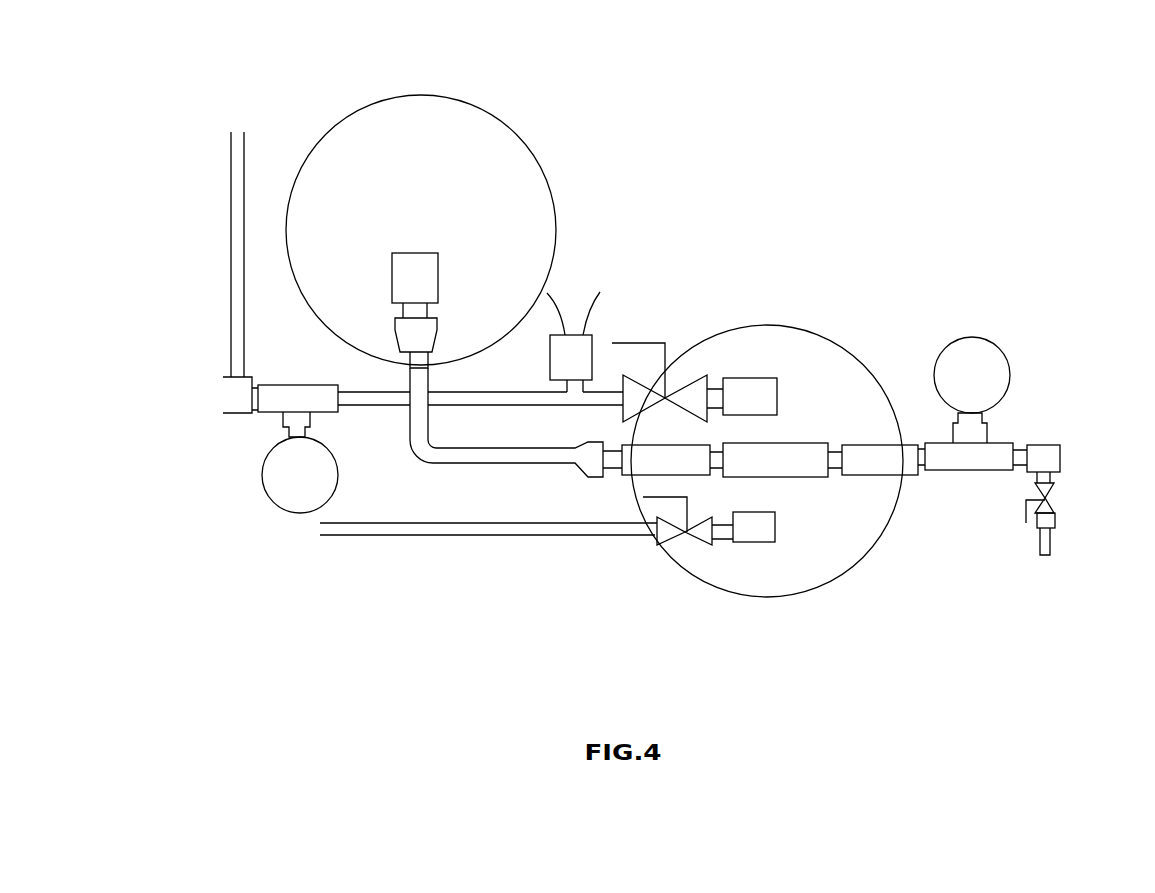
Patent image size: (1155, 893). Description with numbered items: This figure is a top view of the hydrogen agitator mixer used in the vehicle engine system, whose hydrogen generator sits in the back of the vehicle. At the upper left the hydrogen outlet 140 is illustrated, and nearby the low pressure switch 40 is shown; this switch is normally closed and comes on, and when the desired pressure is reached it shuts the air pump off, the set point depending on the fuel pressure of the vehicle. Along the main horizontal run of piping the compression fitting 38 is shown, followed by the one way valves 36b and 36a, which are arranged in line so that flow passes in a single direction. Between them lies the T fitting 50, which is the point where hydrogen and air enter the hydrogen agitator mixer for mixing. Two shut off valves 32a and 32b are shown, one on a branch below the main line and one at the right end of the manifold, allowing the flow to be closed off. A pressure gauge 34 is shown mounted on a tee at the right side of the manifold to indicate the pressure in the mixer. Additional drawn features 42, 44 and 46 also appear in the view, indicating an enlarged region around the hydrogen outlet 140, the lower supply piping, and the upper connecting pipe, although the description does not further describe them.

The shut off valve 32a is at (685, 532).
The shut off valve 32b is at (1052, 523).
The pressure gauge 34 is at (965, 338).
The one way valve 36a is at (897, 468).
The one way valve 36b is at (653, 477).
The compression fitting 38 is at (568, 463).
The low pressure switch 40 is at (593, 340).
The enlarged region 42 is at (373, 103).
The supply pipe 44 is at (592, 532).
The connecting pipe 46 is at (541, 393).
The T fitting 50 is at (797, 475).
The hydrogen outlet 140 is at (393, 290).